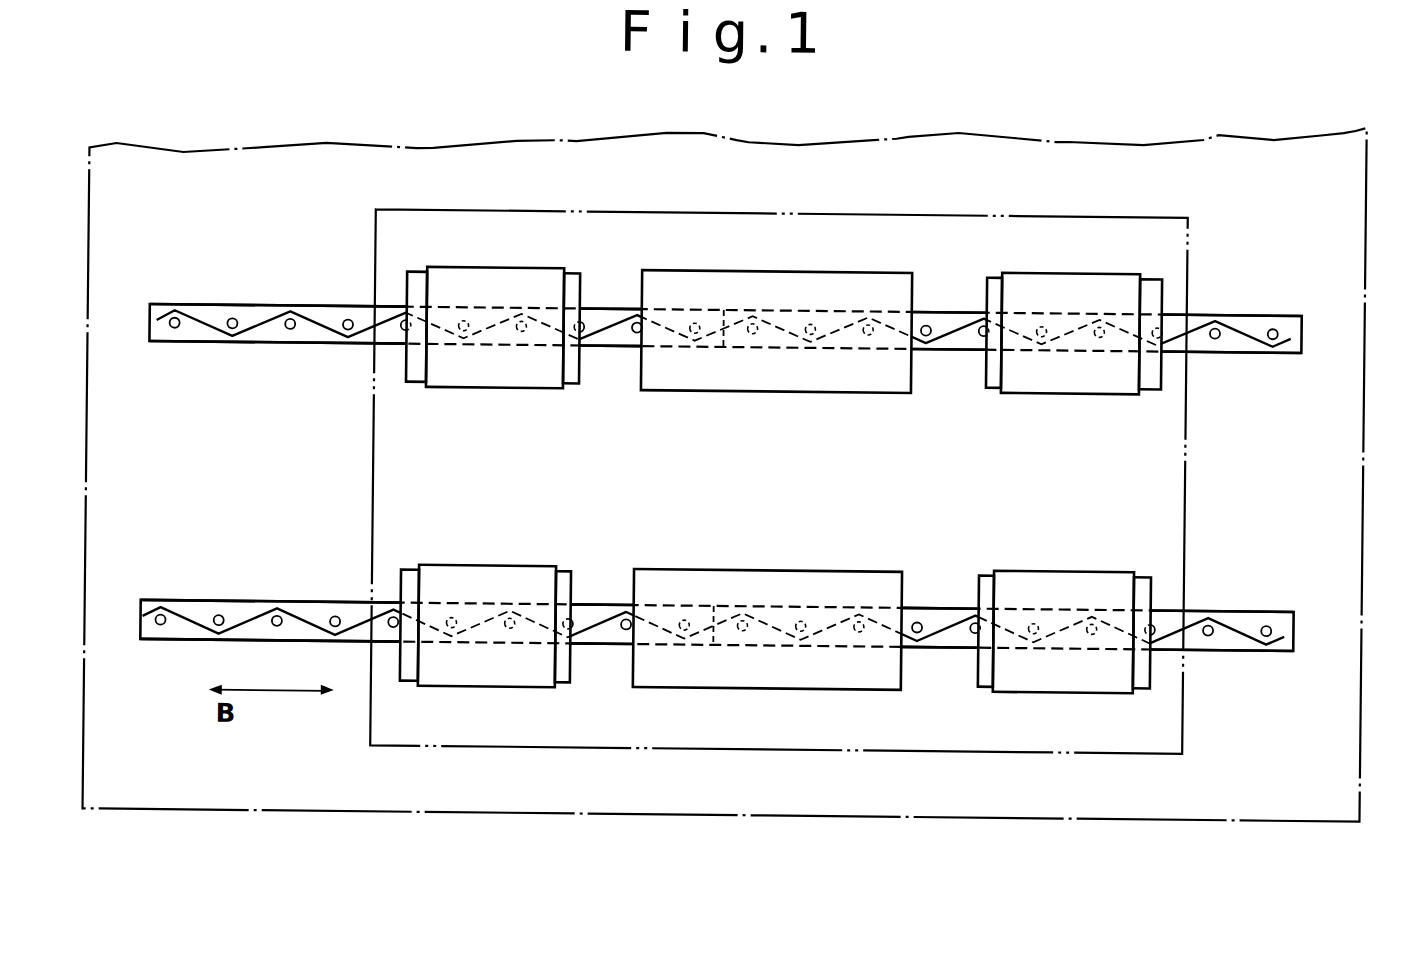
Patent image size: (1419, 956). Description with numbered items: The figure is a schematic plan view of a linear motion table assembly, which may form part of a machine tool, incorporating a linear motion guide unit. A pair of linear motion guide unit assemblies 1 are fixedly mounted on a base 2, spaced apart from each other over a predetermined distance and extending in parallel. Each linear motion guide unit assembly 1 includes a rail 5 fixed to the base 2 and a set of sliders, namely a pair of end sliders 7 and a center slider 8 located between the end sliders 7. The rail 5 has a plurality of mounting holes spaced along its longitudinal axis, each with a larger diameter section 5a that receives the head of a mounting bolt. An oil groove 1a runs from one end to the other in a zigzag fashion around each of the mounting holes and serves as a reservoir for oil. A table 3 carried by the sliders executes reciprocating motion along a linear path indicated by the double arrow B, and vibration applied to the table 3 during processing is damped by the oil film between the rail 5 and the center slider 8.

The linear motion guide unit assembly 1 is at (1195, 640).
The oil groove 1a is at (1242, 633).
The base 2 is at (1350, 836).
The table 3 is at (1185, 482).
The rail 5 is at (1293, 601).
The larger diameter section 5a is at (1266, 620).
The end slider 7 is at (1038, 575).
The center slider 8 is at (740, 578).